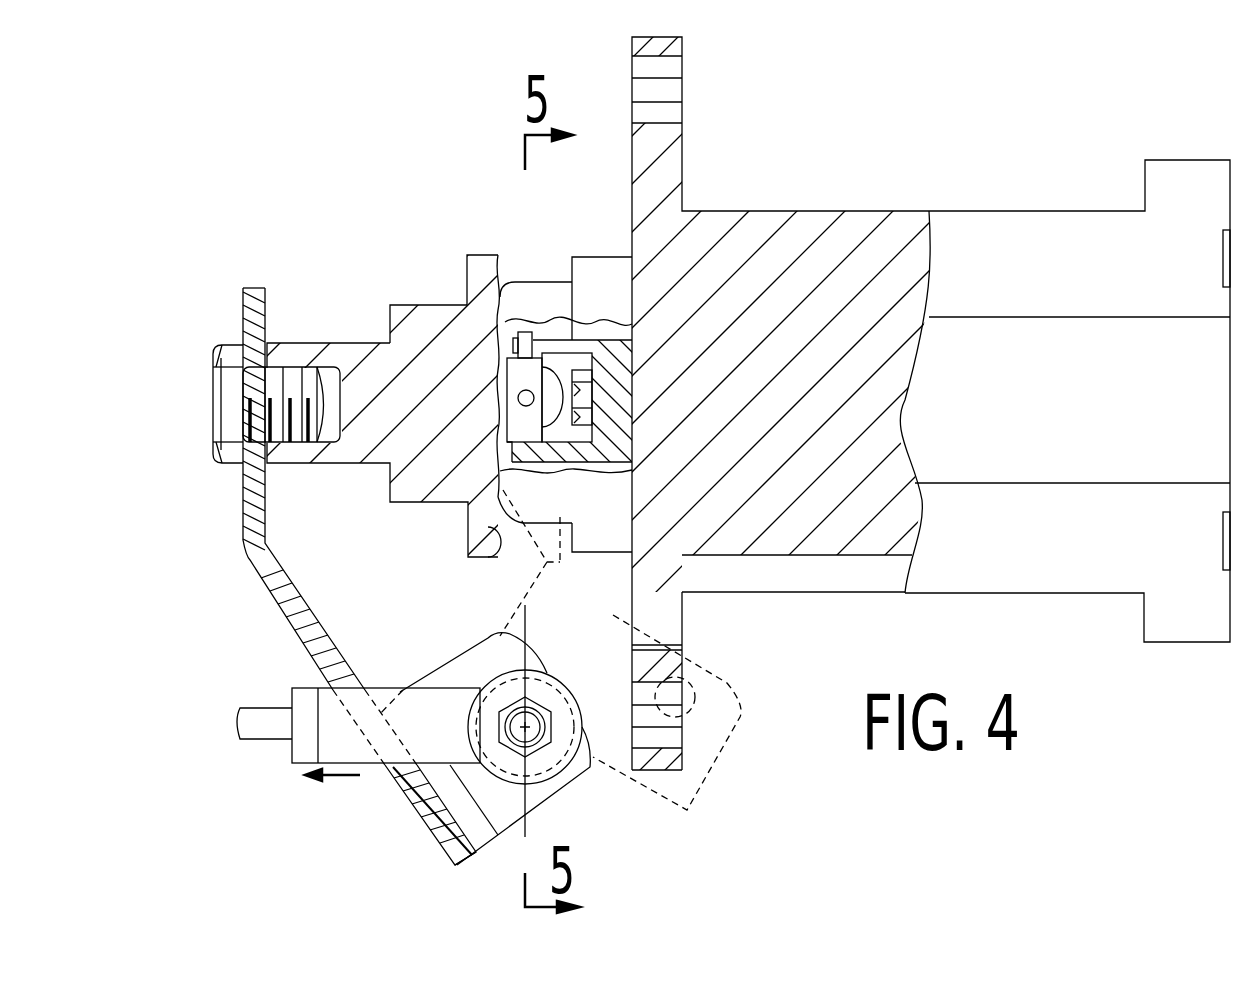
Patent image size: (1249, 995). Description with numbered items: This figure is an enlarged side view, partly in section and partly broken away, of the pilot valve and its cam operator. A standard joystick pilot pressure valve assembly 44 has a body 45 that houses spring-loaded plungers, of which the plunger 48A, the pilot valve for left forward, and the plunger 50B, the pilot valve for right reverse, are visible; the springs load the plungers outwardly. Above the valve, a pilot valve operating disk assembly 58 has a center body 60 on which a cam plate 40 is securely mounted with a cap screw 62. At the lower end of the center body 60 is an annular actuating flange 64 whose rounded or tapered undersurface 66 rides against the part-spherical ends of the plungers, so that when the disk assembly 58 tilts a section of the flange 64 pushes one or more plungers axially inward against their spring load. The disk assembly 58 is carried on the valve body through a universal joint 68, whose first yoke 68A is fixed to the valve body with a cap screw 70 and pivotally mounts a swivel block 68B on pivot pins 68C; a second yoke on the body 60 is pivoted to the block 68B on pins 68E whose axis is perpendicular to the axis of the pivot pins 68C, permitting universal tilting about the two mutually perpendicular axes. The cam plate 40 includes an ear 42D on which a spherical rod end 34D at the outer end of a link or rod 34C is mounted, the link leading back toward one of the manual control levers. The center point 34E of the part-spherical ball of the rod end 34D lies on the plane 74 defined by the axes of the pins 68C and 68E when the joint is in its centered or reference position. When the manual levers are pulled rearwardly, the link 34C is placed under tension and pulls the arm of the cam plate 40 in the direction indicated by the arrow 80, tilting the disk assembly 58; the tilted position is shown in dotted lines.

The pilot valve assembly 44 is at (1003, 226).
The body 45 is at (835, 520).
The pilot valve operating disk assembly 58 is at (456, 292).
The center body 60 is at (352, 360).
The cap screw 62 is at (222, 347).
The annular actuating flange 64 is at (487, 277).
The rounded or tapered undersurface 66 is at (497, 548).
The universal joint 68 is at (553, 328).
The first yoke 68A is at (608, 441).
The swivel block 68B is at (575, 445).
The pivot pins 68C is at (524, 332).
The pins 68E is at (519, 395).
The cap screw 70 is at (566, 364).
The plunger 50B is at (566, 290).
The plunger 48A is at (515, 483).
The cam plate 40 is at (262, 558).
The ear 42D is at (474, 657).
The plane 74 is at (527, 641).
The link or rod 34C is at (252, 717).
The spherical rod end 34D is at (538, 776).
The center point 34E is at (435, 833).
The arrow 80 is at (340, 780).